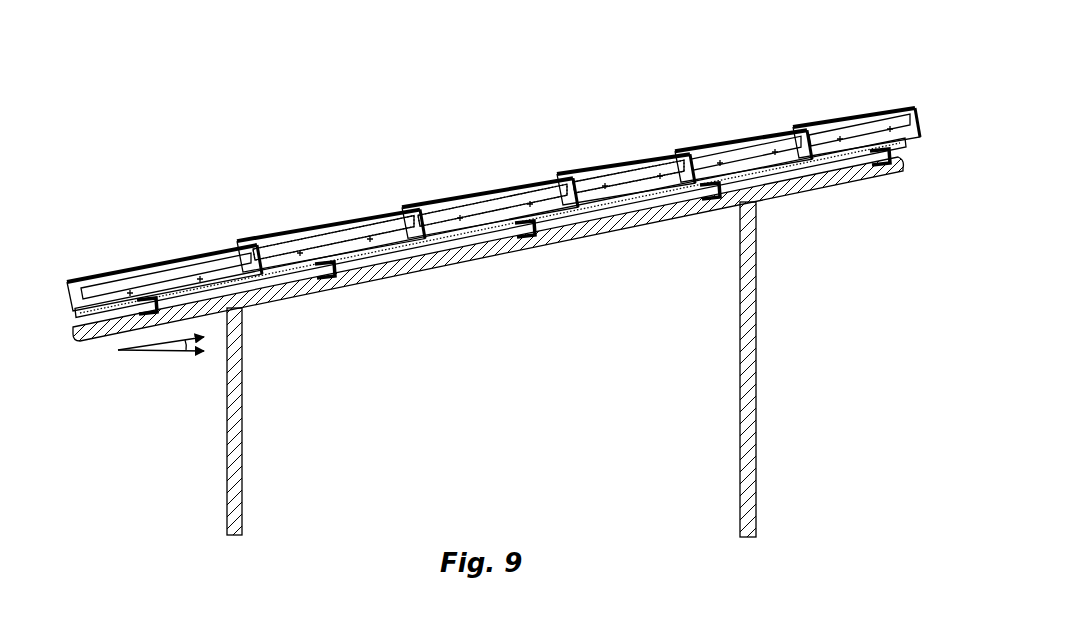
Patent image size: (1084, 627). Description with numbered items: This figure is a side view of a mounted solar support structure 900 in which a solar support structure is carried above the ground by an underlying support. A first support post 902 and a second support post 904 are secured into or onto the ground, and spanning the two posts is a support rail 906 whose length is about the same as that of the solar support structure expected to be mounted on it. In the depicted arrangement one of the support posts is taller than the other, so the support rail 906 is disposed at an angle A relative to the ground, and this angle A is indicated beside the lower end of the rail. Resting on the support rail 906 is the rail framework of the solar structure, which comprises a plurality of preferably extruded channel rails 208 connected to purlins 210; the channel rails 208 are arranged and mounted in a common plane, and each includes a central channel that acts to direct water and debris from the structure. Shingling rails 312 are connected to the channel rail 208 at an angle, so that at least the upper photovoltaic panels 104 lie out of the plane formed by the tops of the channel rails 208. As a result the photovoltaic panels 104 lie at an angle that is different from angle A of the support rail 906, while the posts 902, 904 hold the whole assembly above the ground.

The mounted solar support structure 900 is at (189, 190).
The photovoltaic panel 104 is at (590, 170).
The shingling rail 312 is at (377, 237).
The channel rail 208 is at (910, 148).
The purlin 210 is at (718, 190).
The support rail 906 is at (278, 300).
The first support post 902 is at (240, 370).
The second support post 904 is at (750, 360).
The angle A is at (148, 357).